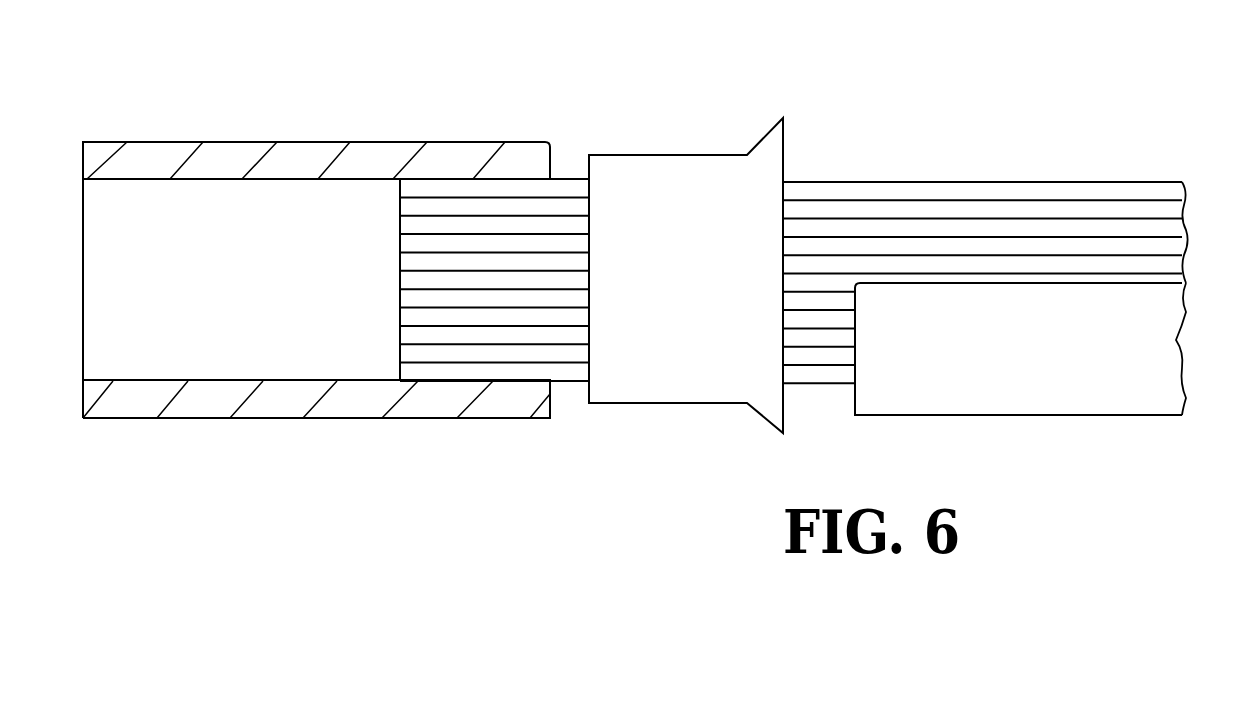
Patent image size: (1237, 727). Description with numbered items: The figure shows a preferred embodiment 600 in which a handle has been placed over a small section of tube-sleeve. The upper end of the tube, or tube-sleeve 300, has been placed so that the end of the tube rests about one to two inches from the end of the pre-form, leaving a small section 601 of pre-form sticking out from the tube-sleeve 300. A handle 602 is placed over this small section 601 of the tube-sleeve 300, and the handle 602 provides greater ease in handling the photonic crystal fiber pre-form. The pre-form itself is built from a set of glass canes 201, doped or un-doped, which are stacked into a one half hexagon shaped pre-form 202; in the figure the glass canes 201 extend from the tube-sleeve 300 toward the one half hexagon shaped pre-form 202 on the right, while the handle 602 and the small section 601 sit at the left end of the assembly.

The preferred embodiment 600 is at (1004, 61).
The handle 602 is at (387, 143).
The small section 601 is at (383, 184).
The tube (tube-sleeve) 300 is at (725, 266).
The glass canes 201 is at (1072, 182).
The one half hexagon shaped pre-form 202 is at (1090, 371).